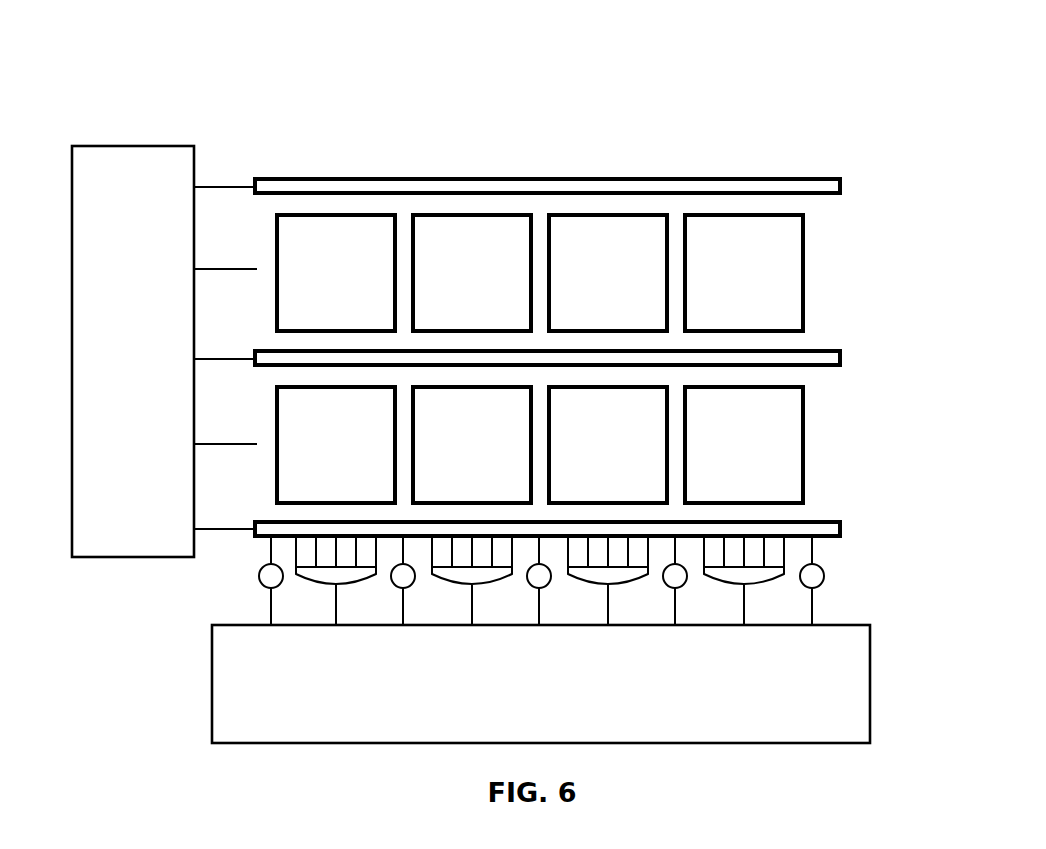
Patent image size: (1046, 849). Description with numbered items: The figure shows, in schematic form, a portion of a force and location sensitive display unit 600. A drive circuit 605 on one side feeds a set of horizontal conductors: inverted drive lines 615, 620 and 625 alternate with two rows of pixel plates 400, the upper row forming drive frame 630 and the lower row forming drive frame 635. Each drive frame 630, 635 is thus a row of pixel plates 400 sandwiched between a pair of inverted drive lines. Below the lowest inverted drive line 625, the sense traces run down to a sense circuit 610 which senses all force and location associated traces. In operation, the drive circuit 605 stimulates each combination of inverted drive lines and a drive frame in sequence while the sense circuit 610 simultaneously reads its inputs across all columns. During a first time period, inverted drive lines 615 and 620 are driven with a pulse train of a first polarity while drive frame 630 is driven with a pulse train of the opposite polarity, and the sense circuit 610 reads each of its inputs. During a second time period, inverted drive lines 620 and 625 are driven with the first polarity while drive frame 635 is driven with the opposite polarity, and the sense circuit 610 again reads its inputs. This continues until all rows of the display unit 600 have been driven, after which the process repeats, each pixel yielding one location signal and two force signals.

The force and location sensitive display unit 600 is at (537, 122).
The drive circuit 605 is at (112, 424).
The sense circuit 610 is at (520, 727).
The inverted drive line 615 is at (842, 187).
The inverted drive line 620 is at (842, 357).
The inverted drive line 625 is at (842, 528).
The drive frame 630 is at (852, 271).
The drive frame 635 is at (852, 443).
The pixel plate 400 is at (608, 359).